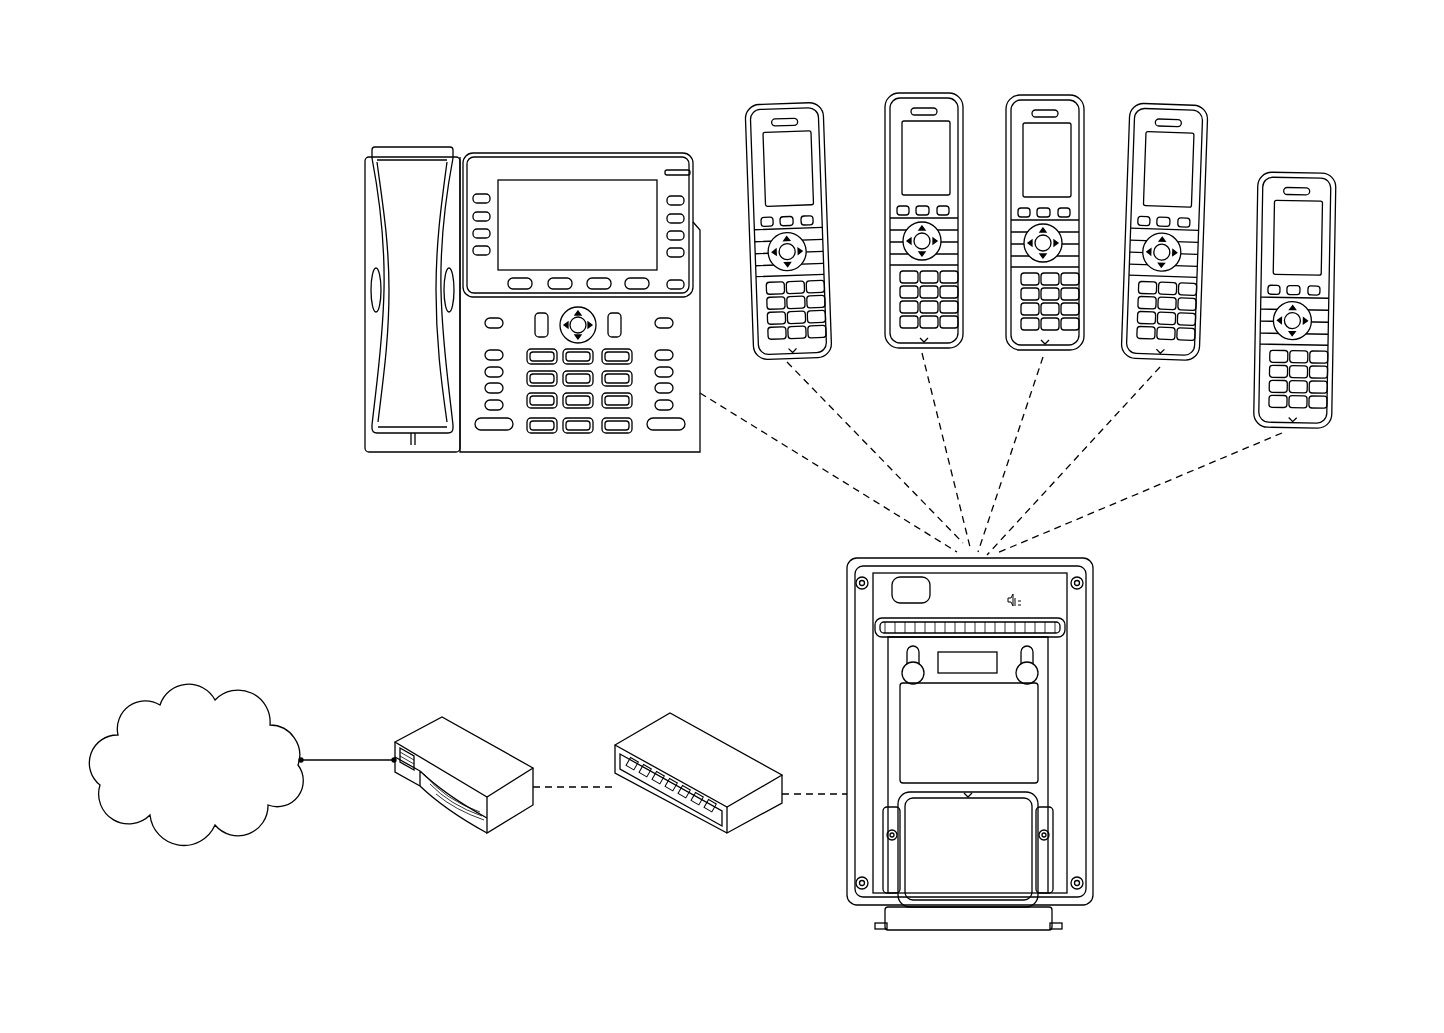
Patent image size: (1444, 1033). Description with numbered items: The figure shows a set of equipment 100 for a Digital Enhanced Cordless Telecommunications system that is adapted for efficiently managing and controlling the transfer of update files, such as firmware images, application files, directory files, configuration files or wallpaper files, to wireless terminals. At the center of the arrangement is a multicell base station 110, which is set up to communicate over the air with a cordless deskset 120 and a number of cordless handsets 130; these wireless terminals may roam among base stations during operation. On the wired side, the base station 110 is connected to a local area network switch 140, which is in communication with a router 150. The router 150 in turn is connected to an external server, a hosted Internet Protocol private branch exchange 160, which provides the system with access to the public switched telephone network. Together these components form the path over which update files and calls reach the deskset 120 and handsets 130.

The set of equipment 100 is at (1368, 88).
The multicell base station 110 is at (1093, 642).
The cordless deskset 120 is at (578, 153).
The cordless handsets 130 is at (782, 106).
The local area network (LAN) switch 140 is at (720, 740).
The router 150 is at (470, 732).
The hosted Internet Protocol (IP) private branch exchange (PBX) 160 is at (152, 690).